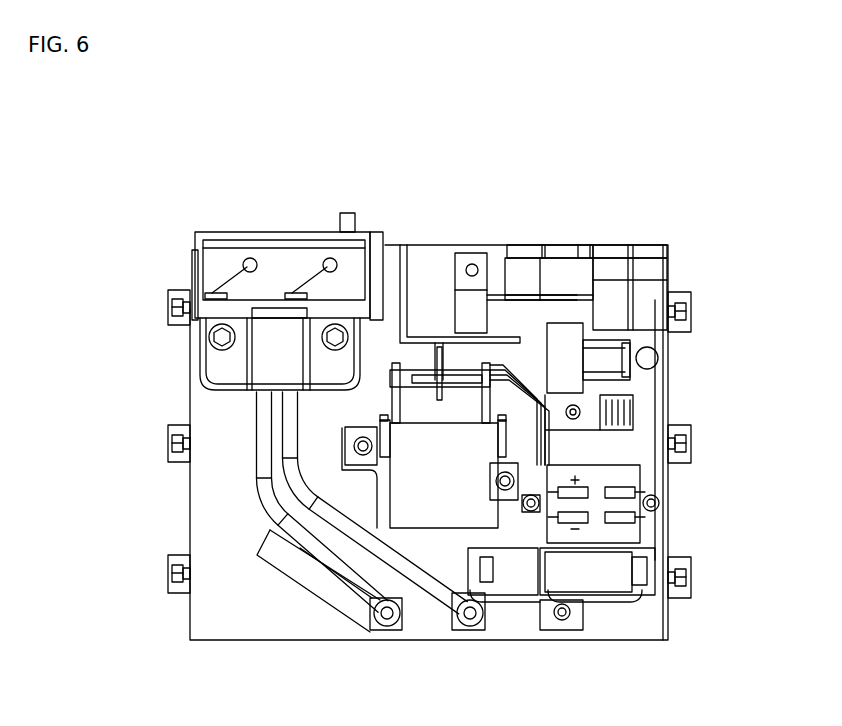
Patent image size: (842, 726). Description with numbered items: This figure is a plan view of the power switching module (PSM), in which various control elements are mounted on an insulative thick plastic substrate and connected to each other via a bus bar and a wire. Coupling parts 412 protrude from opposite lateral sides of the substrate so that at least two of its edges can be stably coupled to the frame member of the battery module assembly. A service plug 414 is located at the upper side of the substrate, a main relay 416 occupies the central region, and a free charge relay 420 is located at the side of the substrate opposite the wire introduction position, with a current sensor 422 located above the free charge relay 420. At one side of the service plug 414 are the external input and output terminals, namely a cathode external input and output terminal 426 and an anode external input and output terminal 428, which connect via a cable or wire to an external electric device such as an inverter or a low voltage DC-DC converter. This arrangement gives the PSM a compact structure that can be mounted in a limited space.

The coupling parts 412 is at (168, 442).
The service plug 414 is at (275, 232).
The main relay 416 is at (436, 508).
The free charge relay 420 is at (645, 563).
The current sensor 422 is at (572, 360).
The cathode external input and output terminal 426 is at (640, 245).
The anode external input and output terminal 428 is at (555, 245).